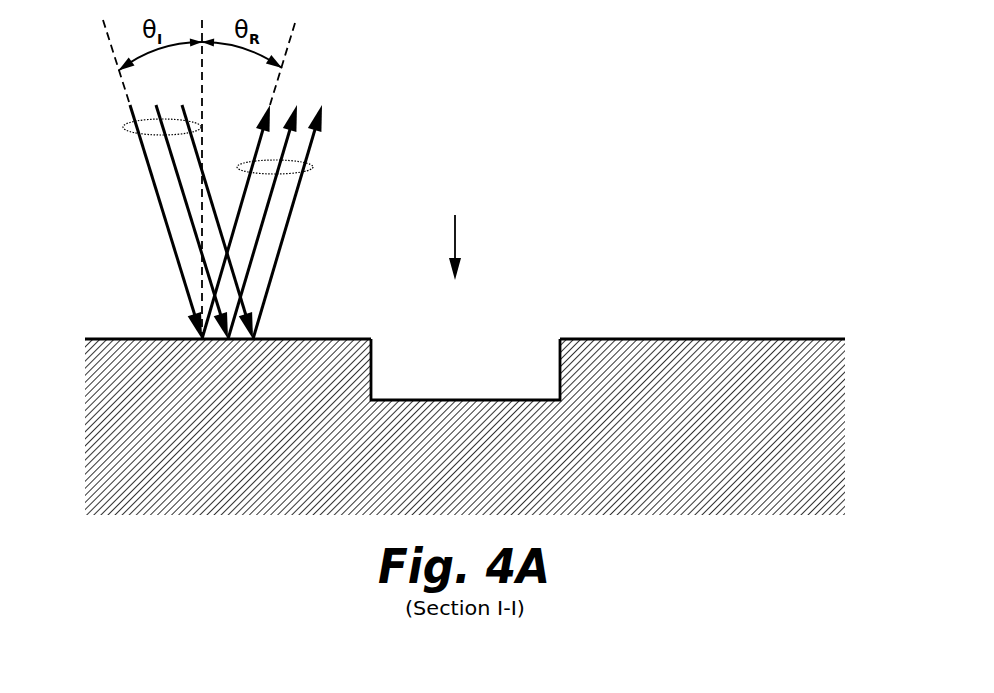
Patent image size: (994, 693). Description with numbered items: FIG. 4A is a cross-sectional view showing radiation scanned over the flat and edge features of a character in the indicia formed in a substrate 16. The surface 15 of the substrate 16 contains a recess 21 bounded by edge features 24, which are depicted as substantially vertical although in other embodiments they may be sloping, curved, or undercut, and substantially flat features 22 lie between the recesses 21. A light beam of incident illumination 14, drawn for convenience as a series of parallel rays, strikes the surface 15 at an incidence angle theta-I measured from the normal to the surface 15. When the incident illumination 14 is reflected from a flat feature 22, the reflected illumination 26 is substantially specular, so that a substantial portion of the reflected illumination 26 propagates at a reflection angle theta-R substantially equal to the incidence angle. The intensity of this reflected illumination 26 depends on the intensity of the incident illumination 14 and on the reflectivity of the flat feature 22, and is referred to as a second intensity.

The incident illumination 14 is at (128, 133).
The surface 15 is at (665, 313).
The substrate 16 is at (448, 472).
The recess 21 is at (455, 233).
The flat feature 22 is at (313, 337).
The edge feature 24 is at (372, 370).
The reflected illumination 26 is at (304, 171).